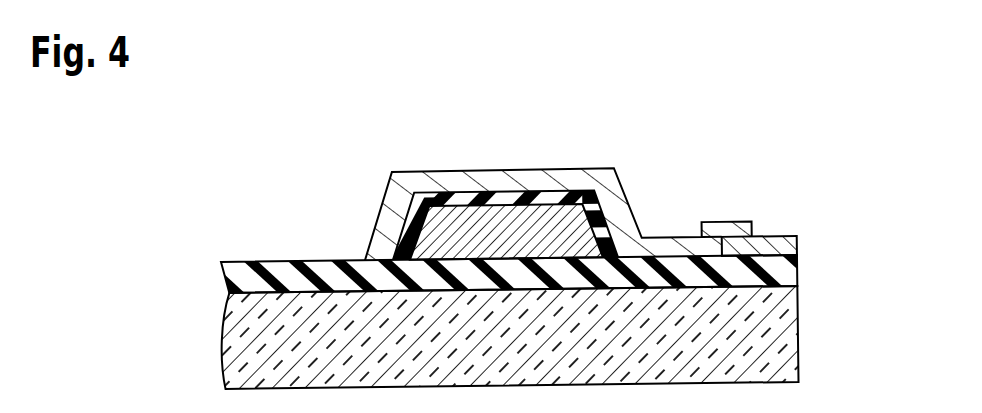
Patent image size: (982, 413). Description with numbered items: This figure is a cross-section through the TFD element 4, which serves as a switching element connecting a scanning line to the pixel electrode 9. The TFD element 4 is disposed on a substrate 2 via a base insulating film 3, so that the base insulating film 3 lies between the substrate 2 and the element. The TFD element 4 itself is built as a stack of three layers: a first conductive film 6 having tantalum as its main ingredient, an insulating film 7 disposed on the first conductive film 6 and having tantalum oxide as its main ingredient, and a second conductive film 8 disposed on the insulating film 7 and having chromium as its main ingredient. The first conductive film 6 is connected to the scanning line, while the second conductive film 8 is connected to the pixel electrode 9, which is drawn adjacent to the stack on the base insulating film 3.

The substrate 2 is at (787, 350).
The base insulating film 3 is at (790, 267).
The TFD element 4 is at (557, 169).
The first conductive film 6 is at (512, 221).
The insulating film 7 is at (470, 200).
The second conductive film 8 is at (417, 179).
The pixel electrode 9 is at (795, 252).